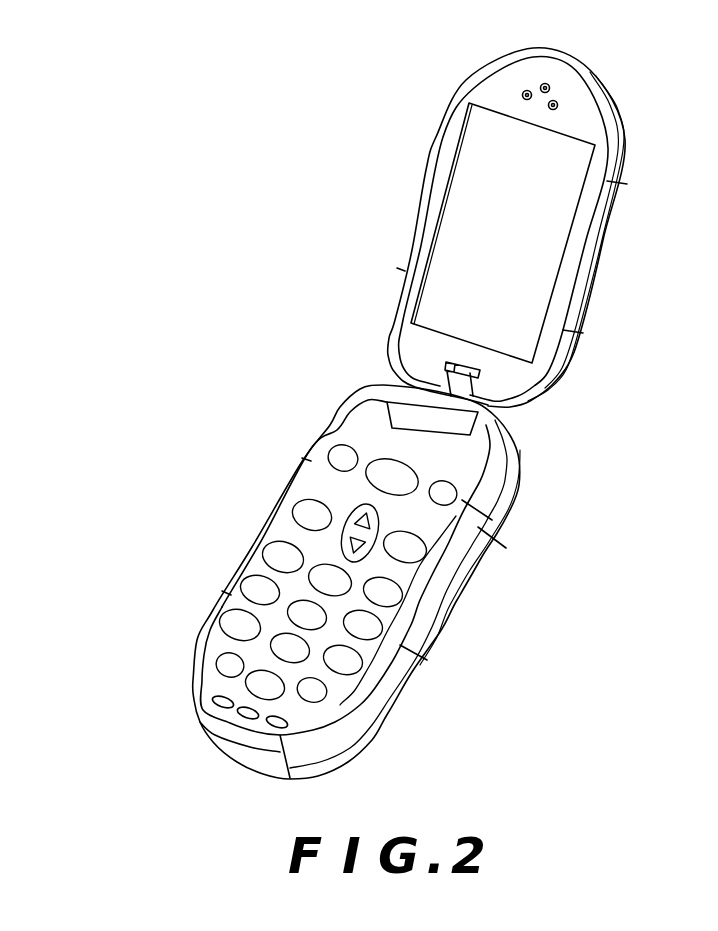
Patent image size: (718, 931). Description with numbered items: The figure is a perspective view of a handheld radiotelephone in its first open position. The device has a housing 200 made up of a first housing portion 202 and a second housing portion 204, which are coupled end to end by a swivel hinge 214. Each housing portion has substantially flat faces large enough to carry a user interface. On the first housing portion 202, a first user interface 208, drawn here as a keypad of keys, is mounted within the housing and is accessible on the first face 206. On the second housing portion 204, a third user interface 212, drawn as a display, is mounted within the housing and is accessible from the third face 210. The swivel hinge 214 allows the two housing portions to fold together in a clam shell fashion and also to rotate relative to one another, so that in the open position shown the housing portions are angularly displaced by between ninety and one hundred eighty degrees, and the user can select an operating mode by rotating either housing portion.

The housing 200 is at (620, 92).
The first housing portion 202 is at (389, 705).
The second housing portion 204 is at (626, 138).
The first face 206 is at (228, 694).
The first user interface 208 is at (268, 556).
The third face 210 is at (493, 83).
The third user interface 212 is at (468, 207).
The swivel hinge 214 is at (400, 401).